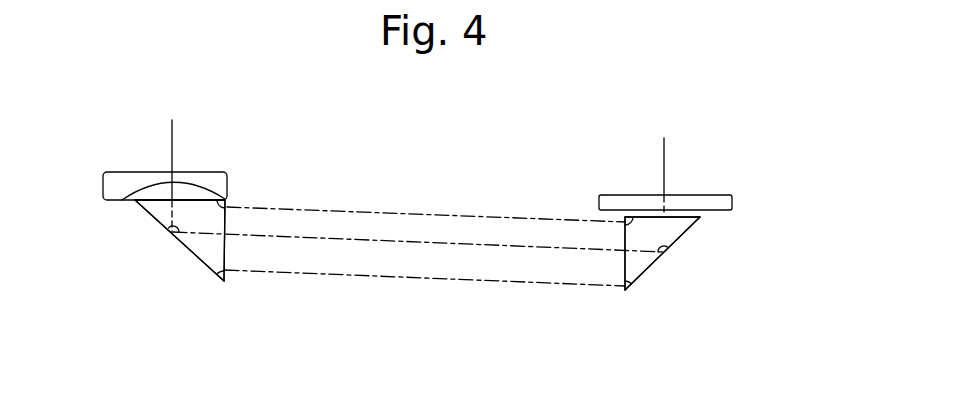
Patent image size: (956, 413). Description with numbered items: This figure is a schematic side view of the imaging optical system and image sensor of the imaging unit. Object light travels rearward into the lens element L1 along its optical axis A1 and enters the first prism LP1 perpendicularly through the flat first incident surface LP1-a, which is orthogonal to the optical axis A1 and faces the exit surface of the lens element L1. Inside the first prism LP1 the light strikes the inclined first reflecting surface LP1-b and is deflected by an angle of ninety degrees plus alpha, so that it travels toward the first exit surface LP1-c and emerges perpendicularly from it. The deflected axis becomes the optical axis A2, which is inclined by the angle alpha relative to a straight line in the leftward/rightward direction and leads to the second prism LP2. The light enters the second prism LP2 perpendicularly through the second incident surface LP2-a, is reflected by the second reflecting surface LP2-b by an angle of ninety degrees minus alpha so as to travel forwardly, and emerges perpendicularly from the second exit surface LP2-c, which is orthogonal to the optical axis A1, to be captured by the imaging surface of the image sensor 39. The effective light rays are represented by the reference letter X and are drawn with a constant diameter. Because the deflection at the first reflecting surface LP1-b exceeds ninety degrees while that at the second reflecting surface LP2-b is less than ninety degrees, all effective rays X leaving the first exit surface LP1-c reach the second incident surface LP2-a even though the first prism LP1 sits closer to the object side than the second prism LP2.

The lens element L1 is at (120, 175).
The optical axis of lens element L1 A1 is at (172, 140).
The first prism LP1 is at (150, 207).
The first incident surface LP1-a is at (180, 197).
The first reflecting surface LP1-b is at (165, 230).
The first exit surface LP1-c is at (225, 252).
The effective light rays X is at (345, 203).
The optical axis A2 is at (412, 240).
The image sensor 39 is at (615, 198).
The second prism LP2 is at (633, 262).
The second incident surface LP2-a is at (627, 230).
The second reflecting surface LP2-b is at (682, 240).
The second exit surface LP2-c is at (670, 217).